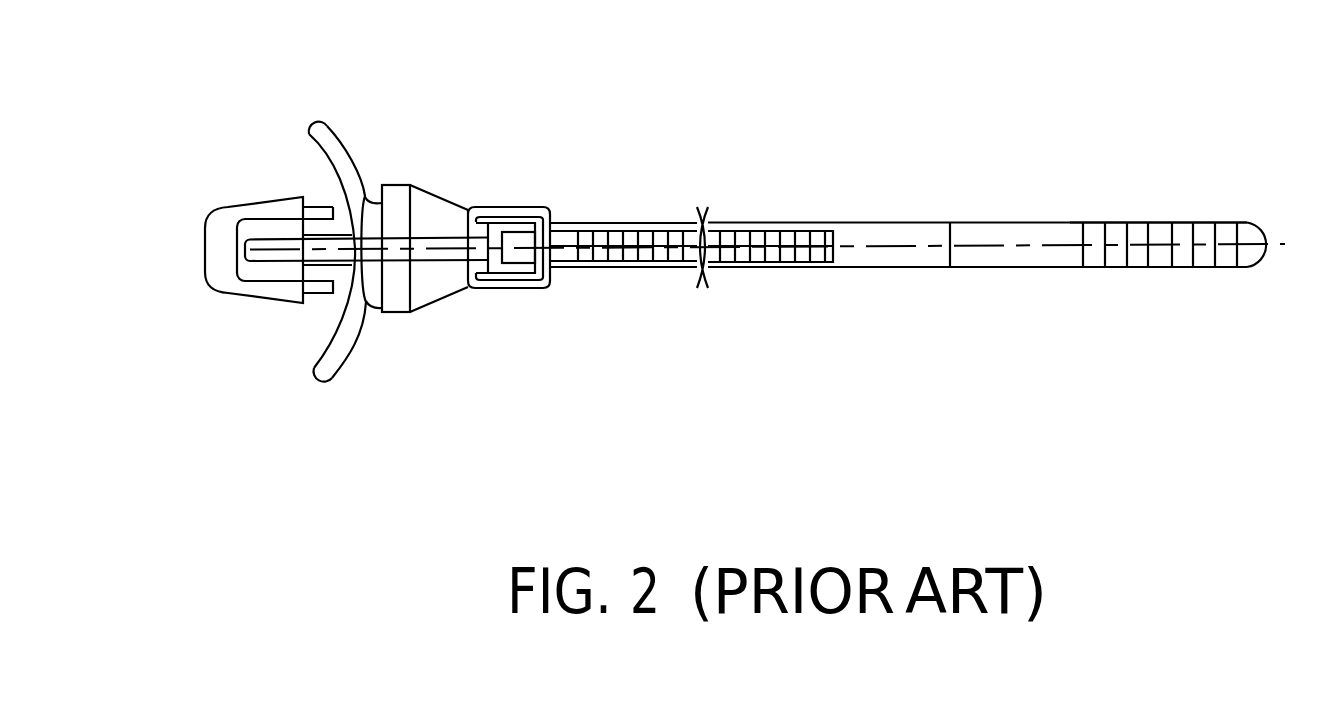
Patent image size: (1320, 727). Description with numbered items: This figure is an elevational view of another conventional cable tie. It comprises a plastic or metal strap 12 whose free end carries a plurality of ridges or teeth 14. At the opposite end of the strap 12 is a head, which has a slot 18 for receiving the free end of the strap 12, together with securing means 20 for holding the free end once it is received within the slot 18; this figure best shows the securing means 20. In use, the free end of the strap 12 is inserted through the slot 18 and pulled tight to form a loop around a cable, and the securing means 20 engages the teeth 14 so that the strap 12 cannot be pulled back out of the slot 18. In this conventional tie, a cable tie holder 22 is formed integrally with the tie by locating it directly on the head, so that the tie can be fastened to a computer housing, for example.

The strap 12 is at (888, 223).
The teeth 14 is at (1185, 223).
The slot 18 is at (495, 235).
The securing means 20 is at (517, 256).
The cable tie holder 22 is at (321, 336).